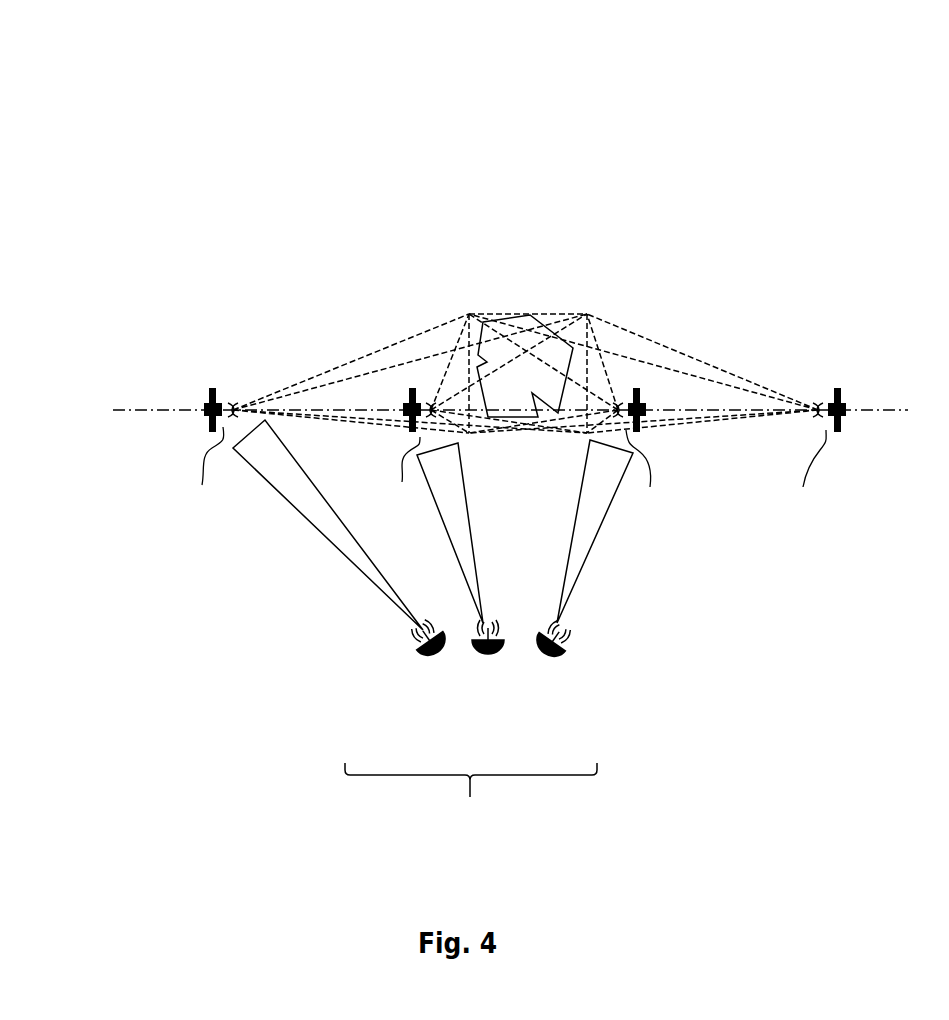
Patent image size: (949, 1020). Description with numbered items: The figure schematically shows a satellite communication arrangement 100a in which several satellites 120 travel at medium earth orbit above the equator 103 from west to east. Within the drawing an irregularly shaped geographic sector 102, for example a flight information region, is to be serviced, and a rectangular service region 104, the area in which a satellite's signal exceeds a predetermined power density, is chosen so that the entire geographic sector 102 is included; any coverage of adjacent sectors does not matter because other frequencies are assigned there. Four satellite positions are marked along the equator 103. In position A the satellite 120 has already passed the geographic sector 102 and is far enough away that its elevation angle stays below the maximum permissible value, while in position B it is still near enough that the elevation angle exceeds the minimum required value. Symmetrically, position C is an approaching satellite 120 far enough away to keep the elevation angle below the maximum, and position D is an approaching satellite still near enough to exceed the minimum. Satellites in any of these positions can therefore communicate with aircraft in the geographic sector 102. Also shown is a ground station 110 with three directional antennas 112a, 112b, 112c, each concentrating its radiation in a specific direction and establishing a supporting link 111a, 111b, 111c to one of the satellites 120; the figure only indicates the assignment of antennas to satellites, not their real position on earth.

The satellite communication system 100a is at (855, 120).
The geographic sector 102 is at (528, 320).
The equator 103 is at (170, 413).
The service region 104 is at (450, 317).
The ground station 110 is at (471, 795).
The supporting link 111a is at (582, 512).
The supporting link 111b is at (447, 512).
The supporting link 111c is at (303, 505).
The directional antenna 112a is at (553, 657).
The directional antenna 112b is at (490, 657).
The directional antenna 112c is at (428, 657).
The satellite 120 is at (212, 388).